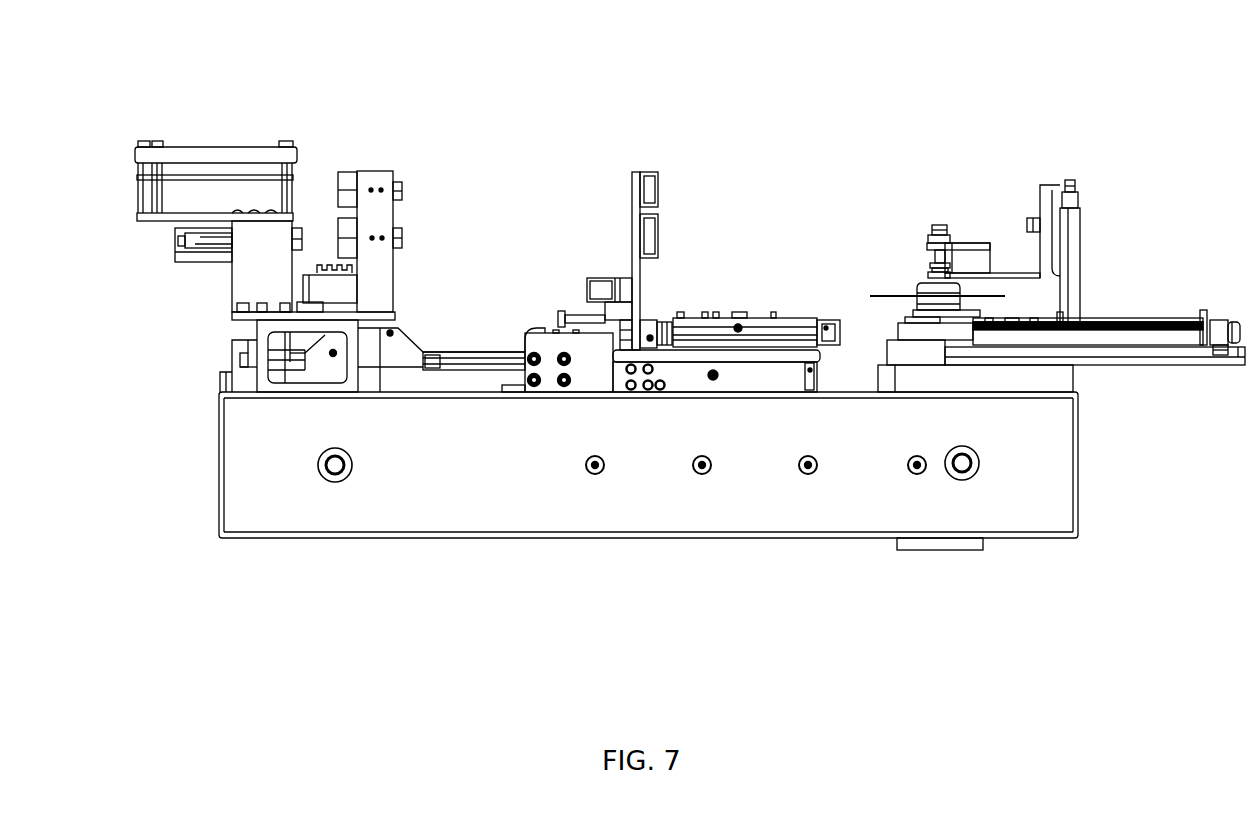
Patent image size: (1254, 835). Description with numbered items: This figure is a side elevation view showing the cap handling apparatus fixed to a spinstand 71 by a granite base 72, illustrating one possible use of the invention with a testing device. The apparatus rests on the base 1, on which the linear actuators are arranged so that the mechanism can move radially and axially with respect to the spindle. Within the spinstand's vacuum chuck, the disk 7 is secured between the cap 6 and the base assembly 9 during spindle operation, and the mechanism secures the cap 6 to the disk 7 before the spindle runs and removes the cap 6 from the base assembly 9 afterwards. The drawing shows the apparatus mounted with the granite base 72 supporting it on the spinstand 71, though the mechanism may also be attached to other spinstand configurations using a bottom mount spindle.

The base 1 is at (1118, 366).
The cap 6 is at (915, 283).
The disk 7 is at (895, 295).
The base assembly 9 is at (915, 312).
The spinstand 71 is at (849, 96).
The granite base 72 is at (533, 537).